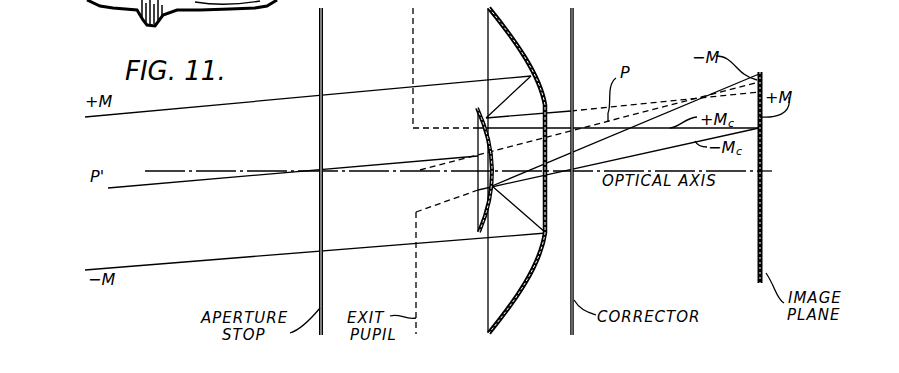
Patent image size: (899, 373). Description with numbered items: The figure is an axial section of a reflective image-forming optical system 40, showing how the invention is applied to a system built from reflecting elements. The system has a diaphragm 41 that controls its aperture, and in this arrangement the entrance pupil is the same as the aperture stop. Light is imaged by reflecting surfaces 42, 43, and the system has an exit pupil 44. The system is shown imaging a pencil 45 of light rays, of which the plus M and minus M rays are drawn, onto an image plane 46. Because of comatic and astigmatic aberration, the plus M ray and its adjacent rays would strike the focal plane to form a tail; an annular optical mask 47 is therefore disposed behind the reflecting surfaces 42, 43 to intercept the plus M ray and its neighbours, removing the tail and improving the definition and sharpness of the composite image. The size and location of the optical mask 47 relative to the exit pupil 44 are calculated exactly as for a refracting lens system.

The reflective image-forming optical system 40 is at (278, 143).
The diaphragm 41 is at (323, 287).
The reflecting surface 42 is at (520, 57).
The reflecting surface 43 is at (475, 133).
The exit pupil 44 is at (414, 78).
The pencil of light rays 45 is at (195, 268).
The image plane 46 is at (757, 258).
The annular optical mask 47 is at (573, 74).